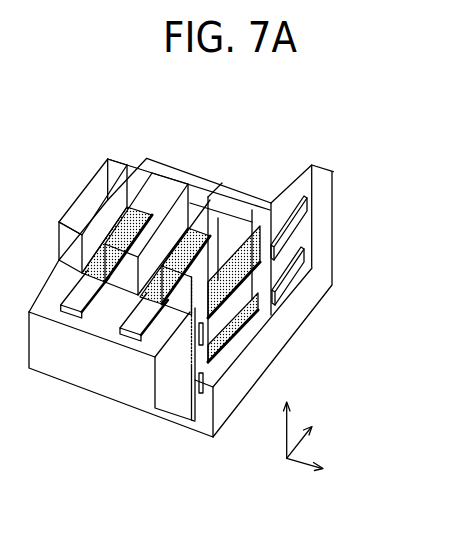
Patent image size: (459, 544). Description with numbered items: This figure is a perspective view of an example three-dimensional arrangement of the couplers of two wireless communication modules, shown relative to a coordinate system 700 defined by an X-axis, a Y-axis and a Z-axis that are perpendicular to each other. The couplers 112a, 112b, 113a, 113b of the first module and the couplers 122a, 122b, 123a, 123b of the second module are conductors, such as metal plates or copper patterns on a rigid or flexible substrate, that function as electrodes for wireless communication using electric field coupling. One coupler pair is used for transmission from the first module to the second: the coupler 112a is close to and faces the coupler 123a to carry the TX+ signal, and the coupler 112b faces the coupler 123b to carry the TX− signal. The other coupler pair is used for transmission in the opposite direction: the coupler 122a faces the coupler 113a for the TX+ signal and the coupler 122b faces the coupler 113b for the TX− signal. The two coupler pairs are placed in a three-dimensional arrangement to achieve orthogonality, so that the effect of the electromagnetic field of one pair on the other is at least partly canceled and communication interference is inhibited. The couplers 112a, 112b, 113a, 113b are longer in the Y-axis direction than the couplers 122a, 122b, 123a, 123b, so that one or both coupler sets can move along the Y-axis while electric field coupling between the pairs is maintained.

The coupler 112a is at (70, 316).
The coupler 112b is at (127, 335).
The coupler 113a is at (303, 249).
The coupler 113b is at (305, 194).
The coupler 122a is at (252, 349).
The coupler 122b is at (246, 243).
The coupler 123a is at (131, 208).
The coupler 123b is at (192, 226).
The coordinate system 700 is at (331, 437).